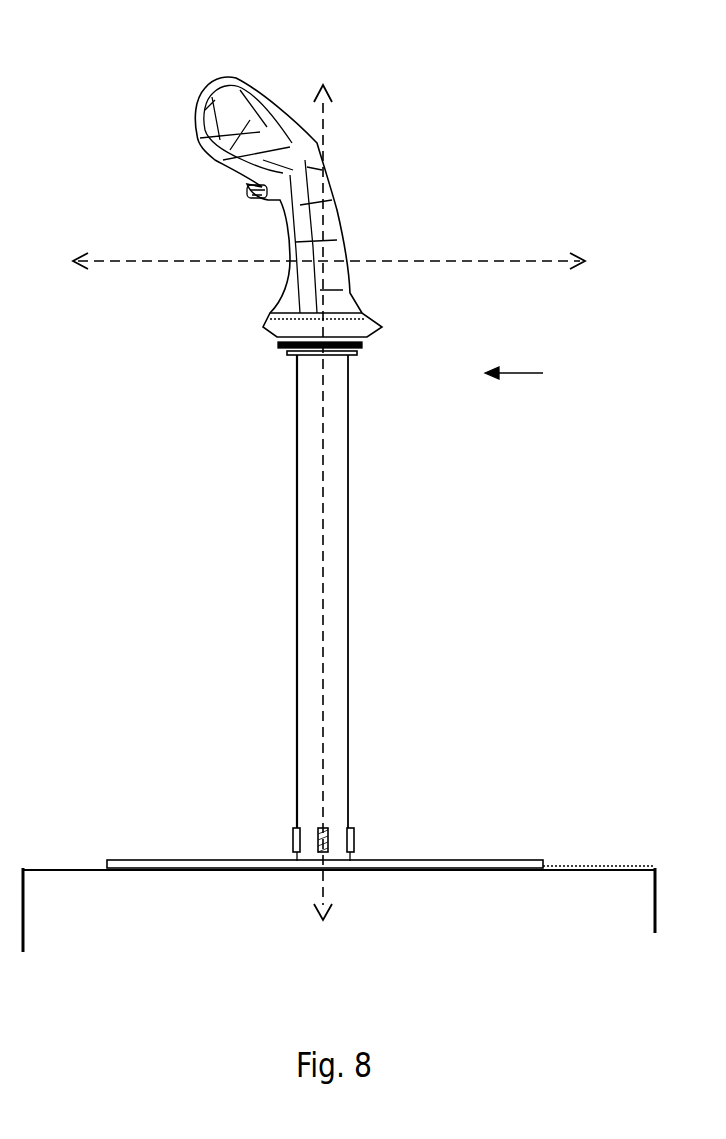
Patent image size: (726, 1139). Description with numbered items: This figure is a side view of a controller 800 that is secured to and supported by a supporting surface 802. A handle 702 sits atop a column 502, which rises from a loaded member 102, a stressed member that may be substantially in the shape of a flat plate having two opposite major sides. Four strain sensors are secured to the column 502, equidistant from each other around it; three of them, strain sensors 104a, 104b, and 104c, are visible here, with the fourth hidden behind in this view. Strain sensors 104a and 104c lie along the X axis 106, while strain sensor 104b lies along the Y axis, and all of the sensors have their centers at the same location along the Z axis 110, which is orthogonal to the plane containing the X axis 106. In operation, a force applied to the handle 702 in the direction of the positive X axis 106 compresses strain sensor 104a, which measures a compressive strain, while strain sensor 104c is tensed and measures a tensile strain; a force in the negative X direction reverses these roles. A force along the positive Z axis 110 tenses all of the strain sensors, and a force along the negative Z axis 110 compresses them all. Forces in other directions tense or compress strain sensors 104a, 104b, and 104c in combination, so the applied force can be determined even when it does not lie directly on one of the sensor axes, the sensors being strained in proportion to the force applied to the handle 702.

The loaded member 102 is at (448, 862).
The strain sensor 104a is at (352, 840).
The strain sensor 104b is at (320, 830).
The strain sensor 104c is at (293, 840).
The X axis 106 is at (542, 258).
The Z axis 110 is at (320, 123).
The column 502 is at (308, 559).
The handle 702 is at (245, 182).
The controller 800 is at (543, 375).
The supporting surface 802 is at (633, 860).